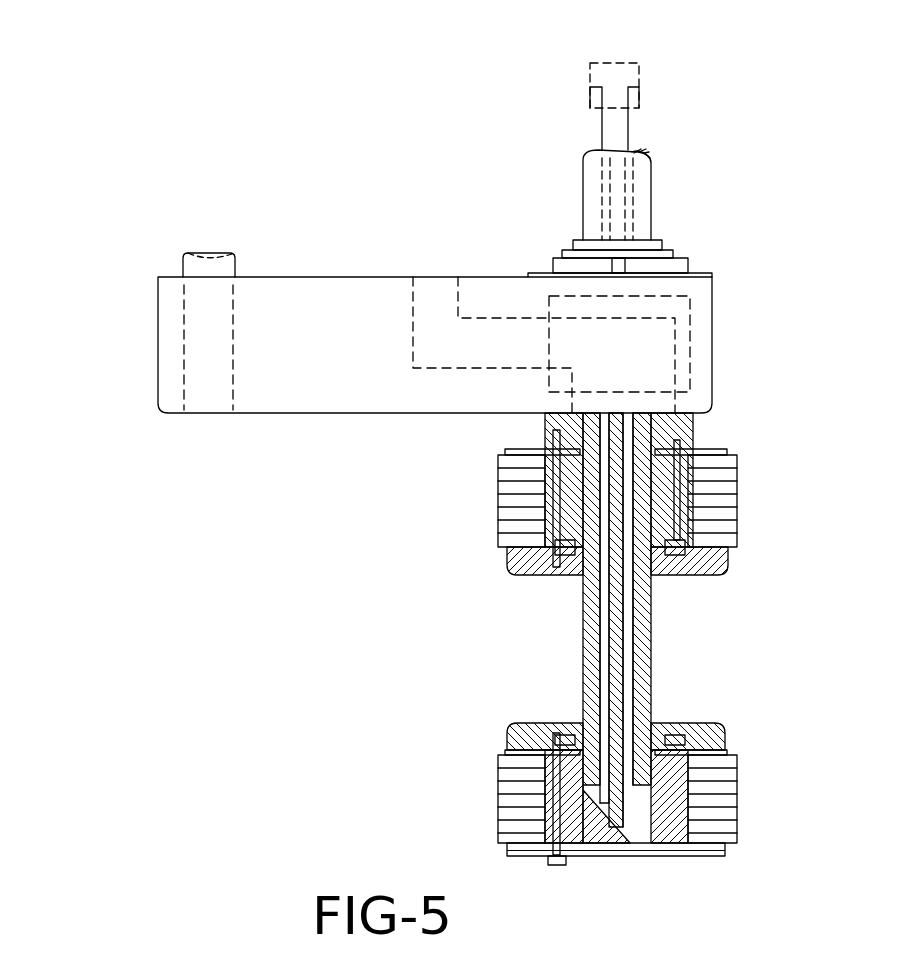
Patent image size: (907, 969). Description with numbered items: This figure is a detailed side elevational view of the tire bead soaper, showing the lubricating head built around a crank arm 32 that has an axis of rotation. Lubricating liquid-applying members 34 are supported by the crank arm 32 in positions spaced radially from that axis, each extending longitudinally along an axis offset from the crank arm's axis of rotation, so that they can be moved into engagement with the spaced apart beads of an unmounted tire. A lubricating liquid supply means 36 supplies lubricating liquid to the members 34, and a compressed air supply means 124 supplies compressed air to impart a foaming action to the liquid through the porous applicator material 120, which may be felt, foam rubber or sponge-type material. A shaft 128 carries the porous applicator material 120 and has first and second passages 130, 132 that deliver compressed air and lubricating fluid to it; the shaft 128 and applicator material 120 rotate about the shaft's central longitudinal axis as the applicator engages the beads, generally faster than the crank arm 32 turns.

The crank arm 32 is at (268, 398).
The lubricating liquid supply means 36 is at (642, 87).
The compressed air supply means 124 is at (413, 277).
The porous applicator material 120 is at (730, 483).
The lubricating liquid-applying member 34 is at (740, 532).
The shaft 128 is at (583, 620).
The first passage 130 is at (600, 688).
The second passage 132 is at (632, 661).